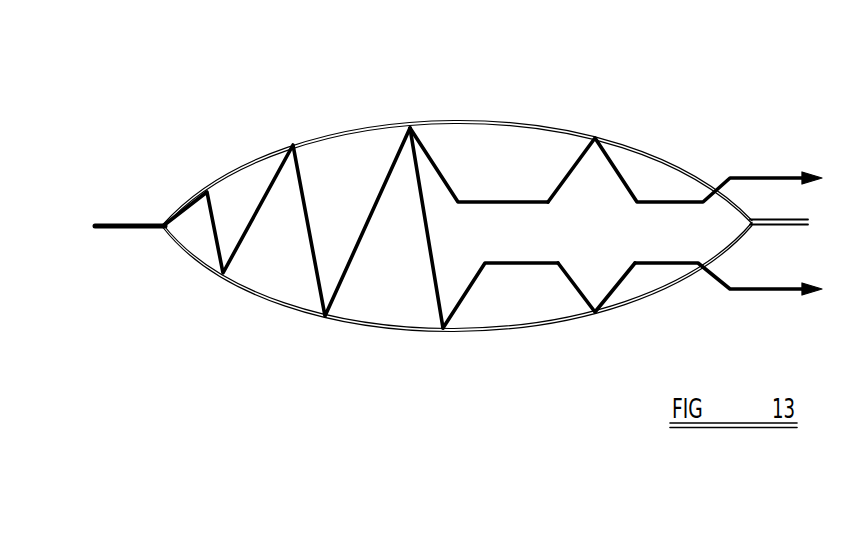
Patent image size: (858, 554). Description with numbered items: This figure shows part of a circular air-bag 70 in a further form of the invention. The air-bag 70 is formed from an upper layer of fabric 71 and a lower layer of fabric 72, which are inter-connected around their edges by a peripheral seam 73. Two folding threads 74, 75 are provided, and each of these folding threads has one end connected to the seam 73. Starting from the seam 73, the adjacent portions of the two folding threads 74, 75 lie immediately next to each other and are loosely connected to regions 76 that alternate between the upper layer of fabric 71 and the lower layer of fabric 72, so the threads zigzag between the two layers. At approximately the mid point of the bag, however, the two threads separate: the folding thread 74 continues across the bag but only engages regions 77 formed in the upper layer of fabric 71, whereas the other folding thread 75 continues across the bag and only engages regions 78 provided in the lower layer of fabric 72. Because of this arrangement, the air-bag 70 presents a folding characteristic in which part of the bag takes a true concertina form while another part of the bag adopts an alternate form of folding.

The air-bag 70 is at (388, 90).
The upper layer of fabric 71 is at (655, 157).
The lower layer of fabric 72 is at (658, 297).
The peripheral seam 73 is at (129, 220).
The folding thread 74 is at (537, 201).
The folding thread 75 is at (508, 264).
The regions 76 is at (207, 190).
The regions 77 is at (595, 138).
The regions 78 is at (443, 329).